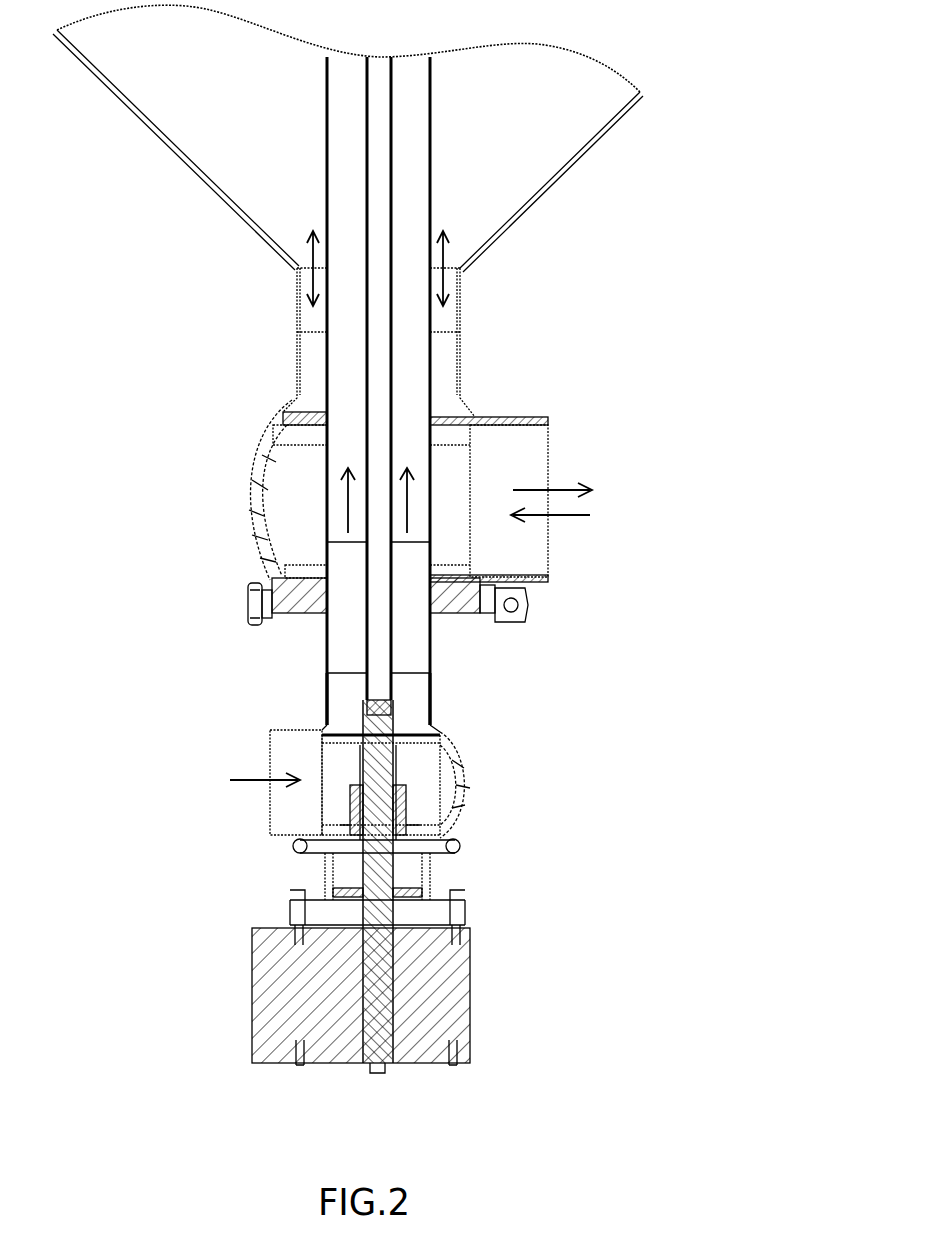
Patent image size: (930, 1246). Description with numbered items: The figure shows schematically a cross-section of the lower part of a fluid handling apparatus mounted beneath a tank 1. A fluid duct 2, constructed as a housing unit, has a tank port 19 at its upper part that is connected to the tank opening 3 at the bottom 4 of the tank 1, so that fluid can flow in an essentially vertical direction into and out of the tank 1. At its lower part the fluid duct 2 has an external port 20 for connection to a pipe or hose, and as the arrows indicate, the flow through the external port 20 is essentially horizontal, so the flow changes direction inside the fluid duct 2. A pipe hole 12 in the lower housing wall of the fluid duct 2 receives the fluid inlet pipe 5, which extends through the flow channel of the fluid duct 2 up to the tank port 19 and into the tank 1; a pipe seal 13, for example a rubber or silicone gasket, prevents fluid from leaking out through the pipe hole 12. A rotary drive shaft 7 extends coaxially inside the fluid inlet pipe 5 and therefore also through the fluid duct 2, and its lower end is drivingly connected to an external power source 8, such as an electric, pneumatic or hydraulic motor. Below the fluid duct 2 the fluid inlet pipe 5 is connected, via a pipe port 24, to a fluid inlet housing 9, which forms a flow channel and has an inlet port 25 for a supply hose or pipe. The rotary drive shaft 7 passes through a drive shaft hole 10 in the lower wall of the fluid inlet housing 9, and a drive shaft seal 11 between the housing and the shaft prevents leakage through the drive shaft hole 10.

The tank 1 is at (567, 128).
The fluid duct 2 is at (447, 398).
The tank opening 3 is at (300, 275).
The bottom 4 is at (235, 182).
The fluid inlet pipe 5 is at (418, 690).
The rotary drive shaft 7 is at (380, 383).
The external power source 8 is at (440, 975).
The fluid inlet housing 9 is at (455, 815).
The drive shaft hole 10 is at (403, 850).
The drive shaft seal 11 is at (405, 803).
The pipe hole 12 is at (320, 618).
The pipe seal 13 is at (325, 597).
The tank port 19 is at (298, 305).
The external port 20 is at (525, 545).
The pipe port 24 is at (408, 722).
The inlet port 25 is at (282, 813).